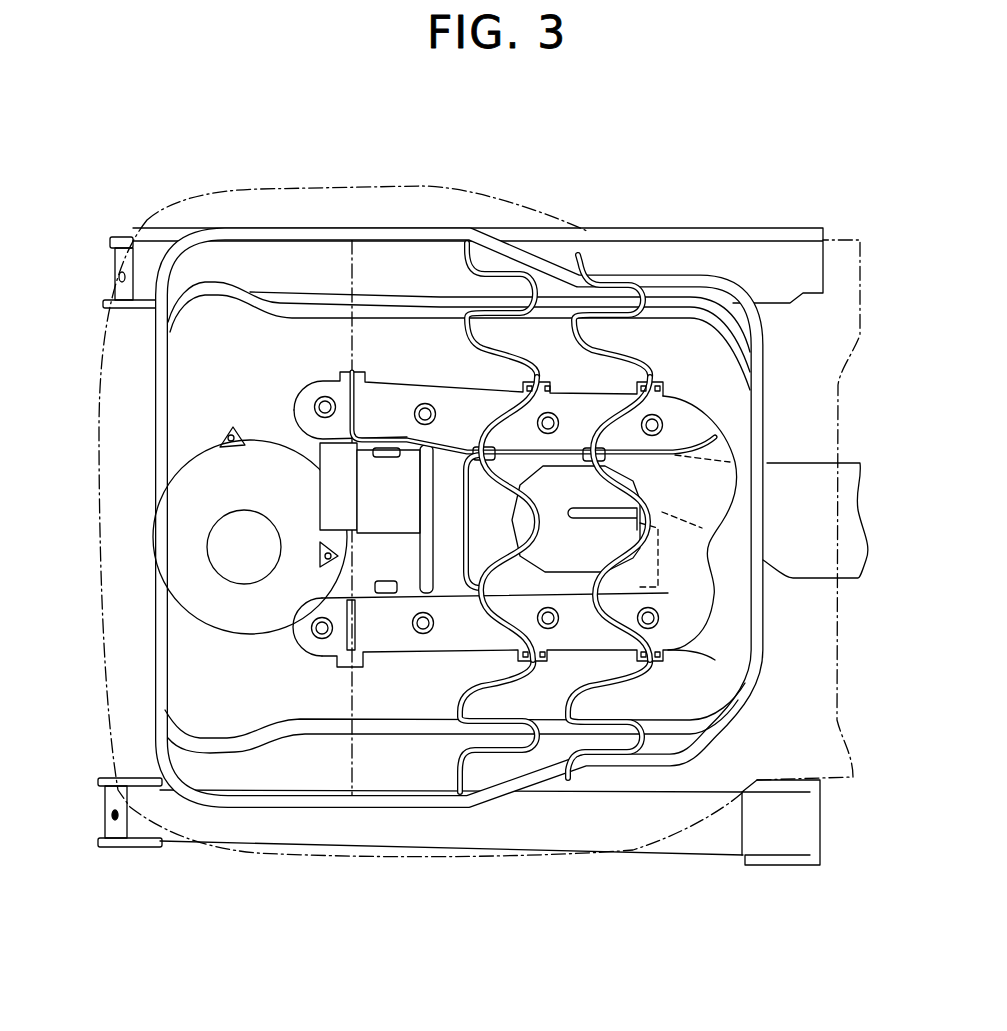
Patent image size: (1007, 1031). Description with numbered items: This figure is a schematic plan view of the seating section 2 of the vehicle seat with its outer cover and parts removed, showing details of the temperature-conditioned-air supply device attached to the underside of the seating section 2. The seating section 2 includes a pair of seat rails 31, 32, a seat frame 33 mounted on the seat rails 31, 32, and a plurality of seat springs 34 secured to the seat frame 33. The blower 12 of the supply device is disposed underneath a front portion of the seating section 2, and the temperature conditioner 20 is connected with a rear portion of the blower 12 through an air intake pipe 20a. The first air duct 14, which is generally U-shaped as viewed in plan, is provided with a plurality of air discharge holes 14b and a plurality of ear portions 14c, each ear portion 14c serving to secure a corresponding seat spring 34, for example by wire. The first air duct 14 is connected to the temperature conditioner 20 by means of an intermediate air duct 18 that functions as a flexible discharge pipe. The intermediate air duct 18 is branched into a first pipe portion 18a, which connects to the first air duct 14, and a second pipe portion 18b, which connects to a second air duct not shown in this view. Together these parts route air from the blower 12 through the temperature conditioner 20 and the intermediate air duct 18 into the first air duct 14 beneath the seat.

The seating section 2 is at (262, 191).
The blower 12 is at (193, 617).
The first air duct 14 is at (589, 393).
The air discharge holes 14b is at (663, 425).
The ear portions 14c is at (666, 389).
The intermediate air duct 18 is at (462, 568).
The first pipe portion 18a is at (578, 550).
The second pipe portion 18b is at (795, 578).
The temperature conditioner 20 is at (381, 500).
The air intake pipe 20a is at (338, 501).
The seat rail 31 is at (520, 228).
The seat rail 32 is at (520, 847).
The seat frame 33 is at (377, 232).
The seat springs 34 is at (658, 398).